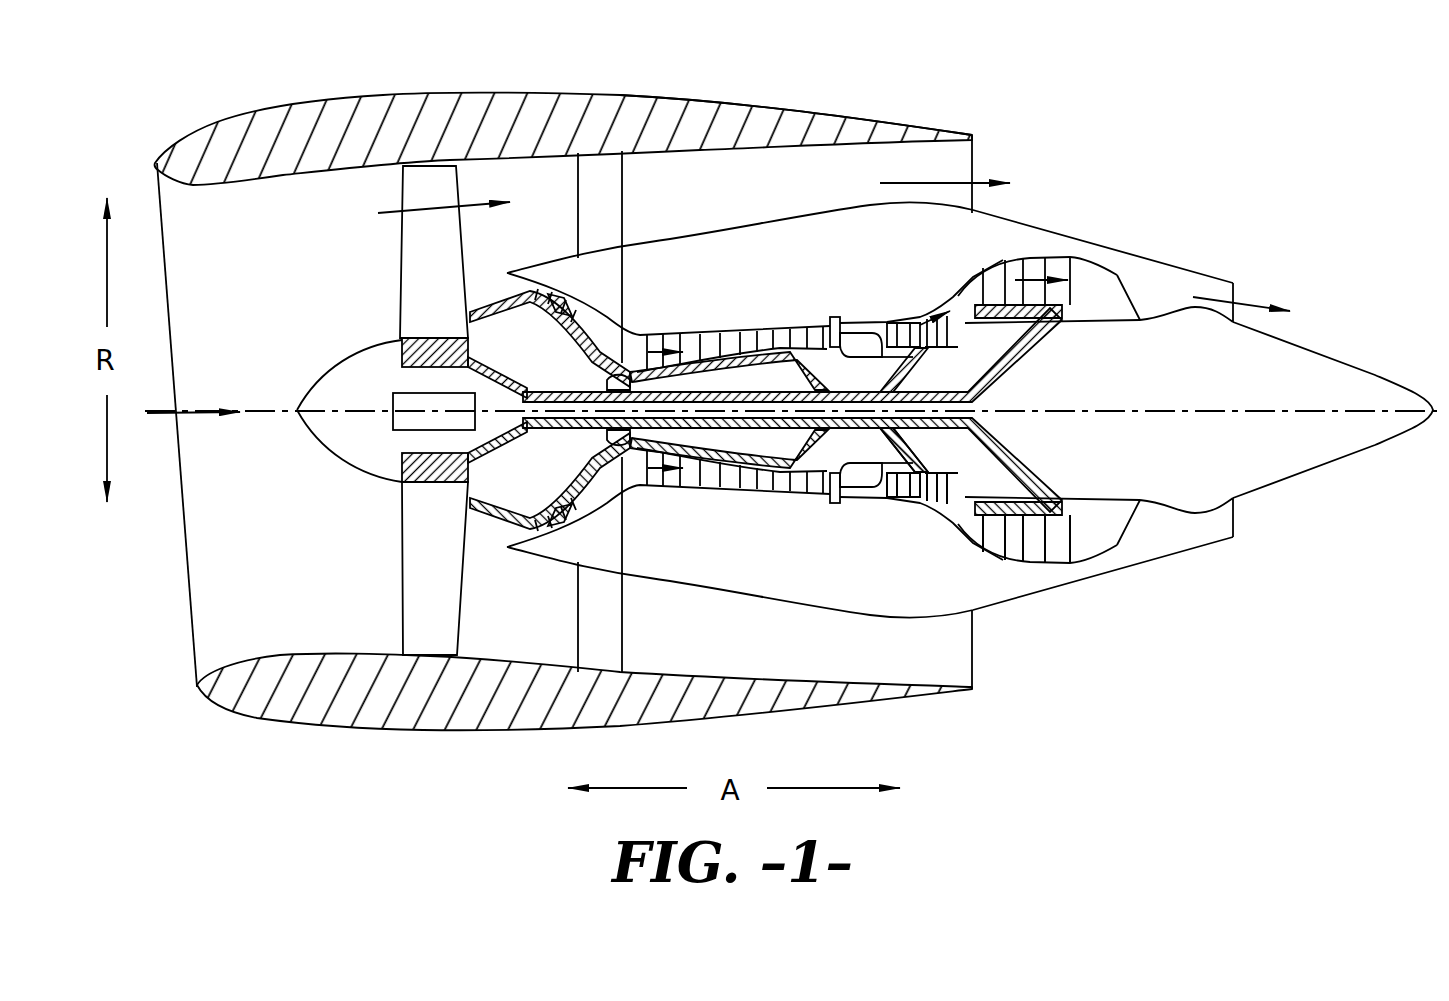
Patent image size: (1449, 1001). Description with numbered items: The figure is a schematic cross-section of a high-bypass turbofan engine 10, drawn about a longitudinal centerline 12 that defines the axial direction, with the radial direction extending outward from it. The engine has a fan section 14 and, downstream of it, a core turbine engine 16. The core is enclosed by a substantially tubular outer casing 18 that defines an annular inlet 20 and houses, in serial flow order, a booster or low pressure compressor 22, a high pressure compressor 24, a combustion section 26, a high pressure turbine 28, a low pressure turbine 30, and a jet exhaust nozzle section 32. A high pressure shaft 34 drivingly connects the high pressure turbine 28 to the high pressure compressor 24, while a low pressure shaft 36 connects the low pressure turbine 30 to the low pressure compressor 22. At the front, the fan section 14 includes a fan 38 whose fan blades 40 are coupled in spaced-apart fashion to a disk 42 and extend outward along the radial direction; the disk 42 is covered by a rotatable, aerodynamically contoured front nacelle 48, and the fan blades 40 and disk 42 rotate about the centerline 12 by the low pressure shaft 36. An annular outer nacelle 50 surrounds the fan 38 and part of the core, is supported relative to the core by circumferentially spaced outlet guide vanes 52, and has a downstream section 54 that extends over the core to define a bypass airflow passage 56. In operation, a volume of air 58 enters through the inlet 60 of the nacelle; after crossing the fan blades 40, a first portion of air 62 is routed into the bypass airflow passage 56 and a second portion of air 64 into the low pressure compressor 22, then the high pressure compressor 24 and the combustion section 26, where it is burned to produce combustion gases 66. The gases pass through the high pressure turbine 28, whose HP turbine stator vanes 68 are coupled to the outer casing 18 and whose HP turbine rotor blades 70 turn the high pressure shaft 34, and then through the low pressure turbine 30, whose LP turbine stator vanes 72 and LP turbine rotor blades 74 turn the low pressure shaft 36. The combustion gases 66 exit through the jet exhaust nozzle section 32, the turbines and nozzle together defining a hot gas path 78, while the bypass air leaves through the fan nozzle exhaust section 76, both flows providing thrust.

The turbofan engine 10 is at (1222, 162).
The longitudinal centerline 12 is at (1147, 408).
The fan section 14 is at (582, 403).
The core turbine engine 16 is at (950, 418).
The outer casing 18 is at (817, 605).
The annular inlet 20 is at (517, 533).
The low pressure compressor 22 is at (587, 503).
The high pressure compressor 24 is at (655, 482).
The combustion section 26 is at (852, 487).
The high pressure turbine 28 is at (938, 490).
The low pressure turbine 30 is at (1068, 566).
The jet exhaust nozzle section 32 is at (1233, 293).
The high pressure shaft 34 is at (898, 358).
The low pressure shaft 36 is at (580, 393).
The fan 38 is at (387, 253).
The fan blades 40 is at (397, 598).
The disk 42 is at (392, 350).
The front nacelle 48 is at (322, 378).
The outer nacelle 50 is at (582, 420).
The outlet guide vanes 52 is at (625, 177).
The downstream section 54 is at (786, 106).
The bypass airflow passage 56 is at (736, 199).
The volume of air 58 is at (190, 410).
The inlet 60 is at (193, 643).
The first portion of air 62 is at (417, 207).
The second portion of air 64 is at (490, 287).
The combustion gases 66 is at (907, 323).
The HP turbine stator vanes 68 is at (888, 510).
The HP turbine rotor blades 70 is at (918, 500).
The LP turbine stator vanes 72 is at (975, 547).
The LP turbine rotor blades 74 is at (992, 540).
The fan nozzle exhaust section 76 is at (972, 160).
The hot gas path 78 is at (958, 293).